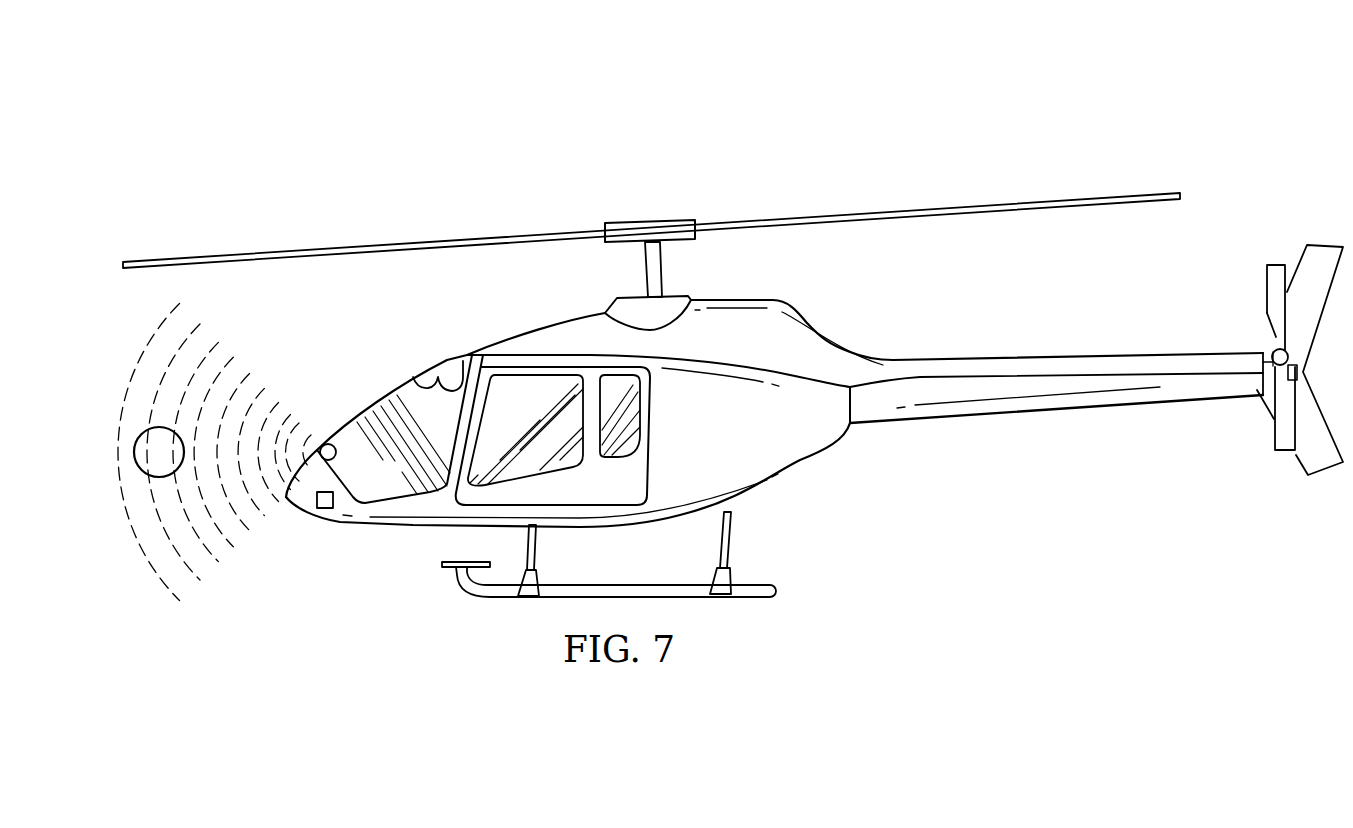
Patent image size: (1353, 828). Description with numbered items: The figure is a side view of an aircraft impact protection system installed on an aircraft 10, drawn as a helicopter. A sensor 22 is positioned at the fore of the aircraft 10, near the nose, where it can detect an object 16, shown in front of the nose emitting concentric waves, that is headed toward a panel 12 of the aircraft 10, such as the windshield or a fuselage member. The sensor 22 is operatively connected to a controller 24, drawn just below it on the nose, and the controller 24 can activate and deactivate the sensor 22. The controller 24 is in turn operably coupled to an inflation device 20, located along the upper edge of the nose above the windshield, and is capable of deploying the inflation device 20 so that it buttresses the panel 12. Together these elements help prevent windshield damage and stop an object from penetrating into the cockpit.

The aircraft 10 is at (733, 339).
The panel 12 is at (390, 390).
The object 16 is at (134, 452).
The inflation device 20 is at (413, 378).
The sensor 22 is at (336, 448).
The controller 24 is at (325, 508).